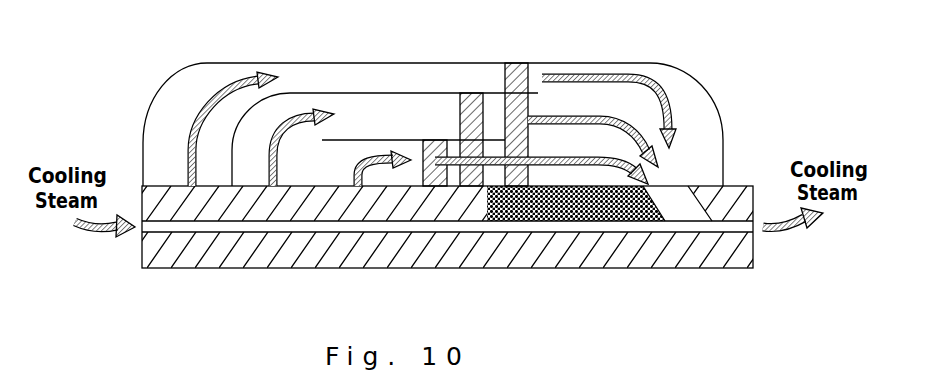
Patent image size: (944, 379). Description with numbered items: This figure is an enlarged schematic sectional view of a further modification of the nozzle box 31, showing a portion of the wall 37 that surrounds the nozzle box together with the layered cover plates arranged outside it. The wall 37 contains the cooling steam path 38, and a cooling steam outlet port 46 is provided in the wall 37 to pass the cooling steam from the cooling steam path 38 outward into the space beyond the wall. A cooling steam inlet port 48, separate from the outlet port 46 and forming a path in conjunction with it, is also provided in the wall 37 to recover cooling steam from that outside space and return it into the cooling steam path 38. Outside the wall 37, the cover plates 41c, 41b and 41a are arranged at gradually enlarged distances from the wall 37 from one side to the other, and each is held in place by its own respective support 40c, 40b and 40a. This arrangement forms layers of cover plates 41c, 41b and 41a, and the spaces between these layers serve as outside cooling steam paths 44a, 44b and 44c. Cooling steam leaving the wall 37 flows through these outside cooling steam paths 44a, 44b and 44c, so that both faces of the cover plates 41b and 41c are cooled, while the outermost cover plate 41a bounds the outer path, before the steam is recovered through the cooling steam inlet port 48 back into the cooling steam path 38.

The nozzle box 31 is at (779, 270).
The wall 37 is at (447, 251).
The cooling steam path 38 is at (233, 228).
The cooling steam outlet port 46 is at (172, 210).
The cooling steam inlet port 48 is at (683, 210).
The support 40a is at (518, 187).
The support 40b is at (473, 187).
The support 40c is at (432, 187).
The cover plate 41a is at (290, 62).
The cover plate 41b is at (350, 92).
The cover plate 41c is at (400, 140).
The outside cooling steam path 44a is at (333, 88).
The outside cooling steam path 44b is at (383, 127).
The outside cooling steam path 44c is at (346, 174).